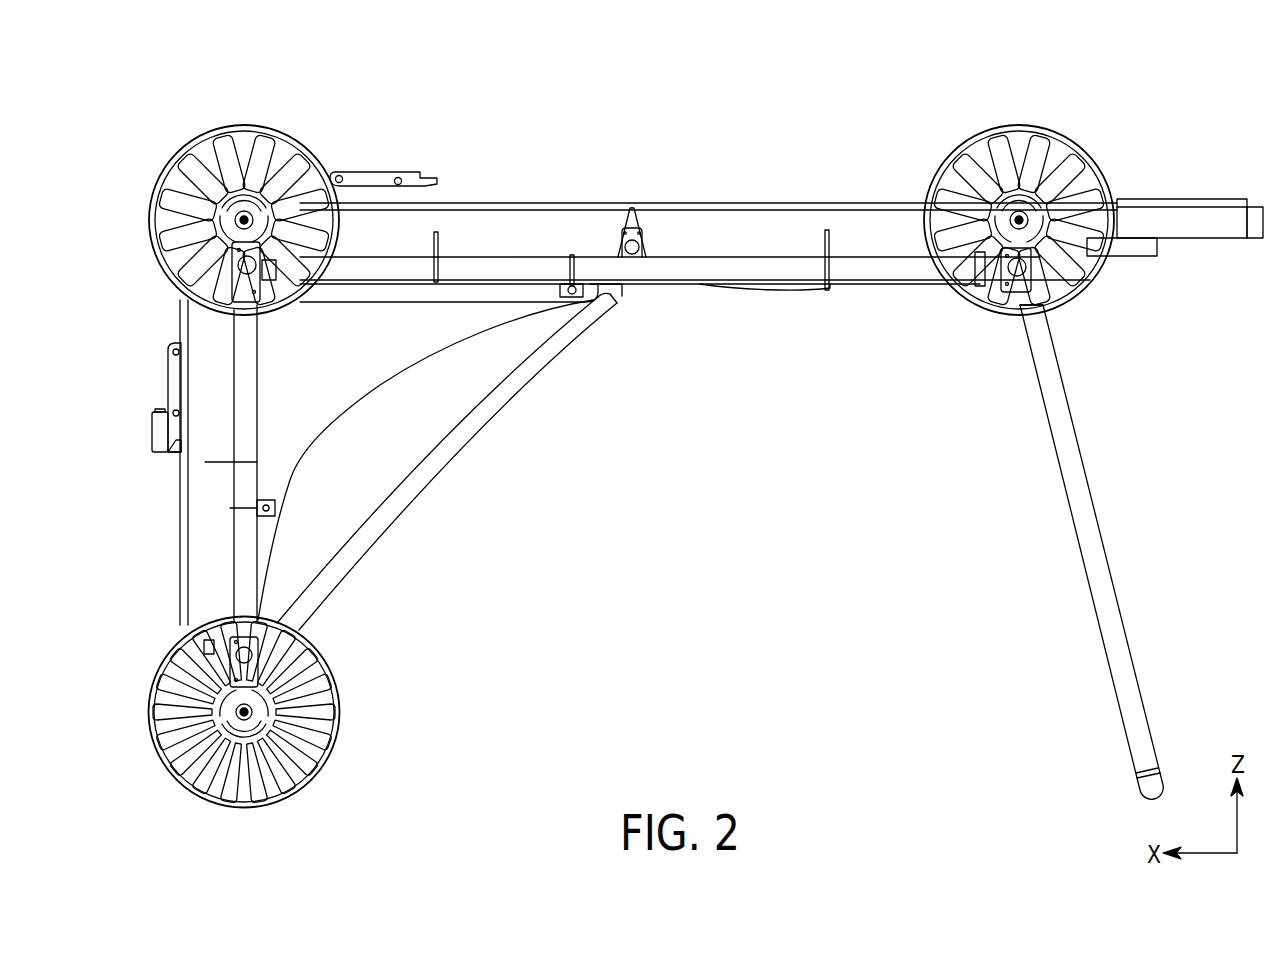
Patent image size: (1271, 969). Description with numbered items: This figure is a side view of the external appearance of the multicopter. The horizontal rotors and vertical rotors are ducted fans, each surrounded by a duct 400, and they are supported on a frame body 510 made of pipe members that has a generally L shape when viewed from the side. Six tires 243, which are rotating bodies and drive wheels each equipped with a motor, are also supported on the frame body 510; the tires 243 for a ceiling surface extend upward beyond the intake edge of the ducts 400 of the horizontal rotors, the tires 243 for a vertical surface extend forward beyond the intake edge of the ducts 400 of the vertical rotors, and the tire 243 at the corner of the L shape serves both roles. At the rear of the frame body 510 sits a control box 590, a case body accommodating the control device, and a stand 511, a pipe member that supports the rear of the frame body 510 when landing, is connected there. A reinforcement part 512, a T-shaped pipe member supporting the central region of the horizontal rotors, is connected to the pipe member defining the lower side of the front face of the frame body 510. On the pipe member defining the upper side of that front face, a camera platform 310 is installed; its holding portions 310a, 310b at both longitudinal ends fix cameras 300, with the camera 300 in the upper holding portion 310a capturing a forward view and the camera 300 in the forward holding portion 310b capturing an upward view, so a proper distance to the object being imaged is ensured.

The tire 243 is at (287, 121).
The camera 300 is at (162, 413).
The camera platform 310 is at (166, 349).
The upper holding portion 310a is at (372, 172).
The forward holding portion 310b is at (160, 442).
The duct 400 is at (523, 232).
The frame body 510 is at (670, 272).
The stand 511 is at (1083, 512).
The reinforcement part 512 is at (420, 480).
The control box 590 is at (1148, 215).